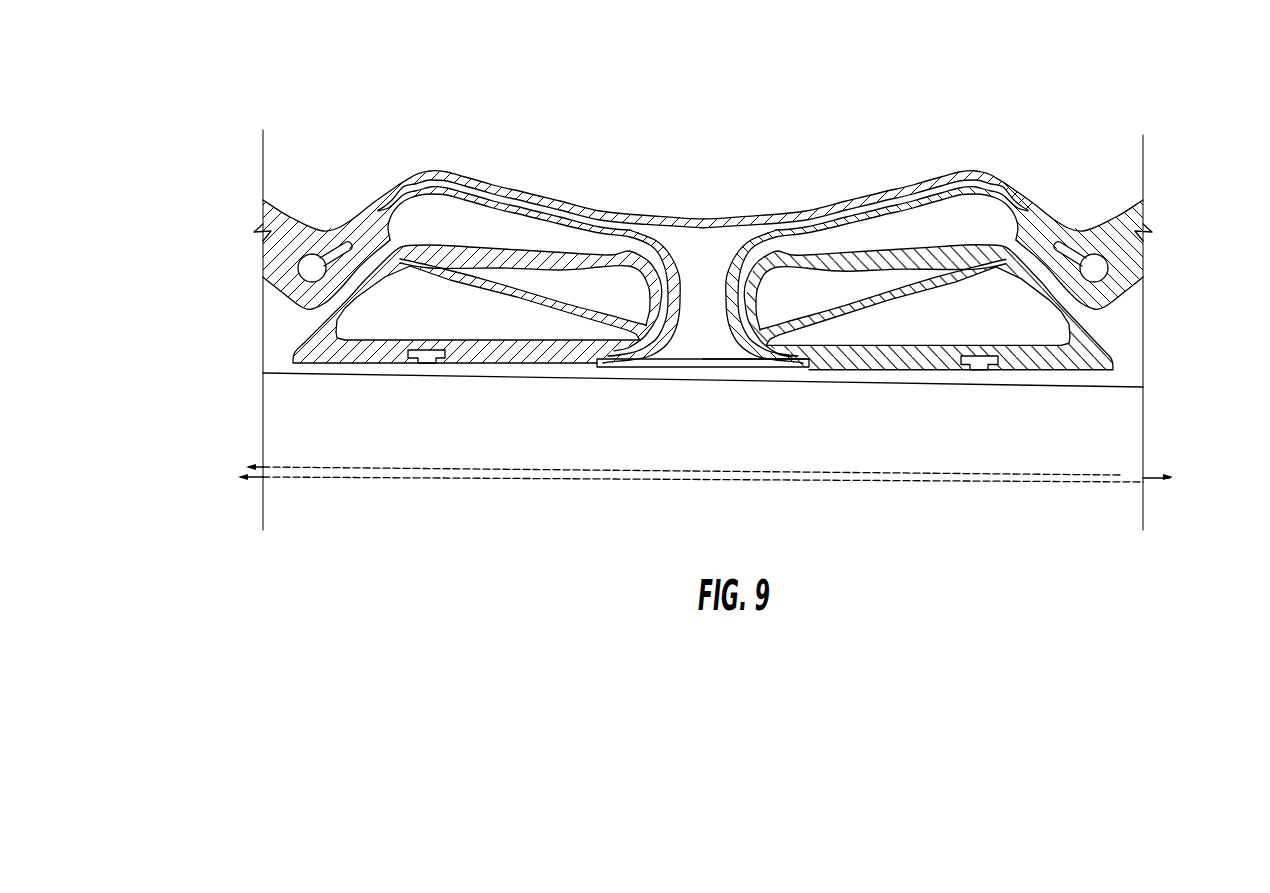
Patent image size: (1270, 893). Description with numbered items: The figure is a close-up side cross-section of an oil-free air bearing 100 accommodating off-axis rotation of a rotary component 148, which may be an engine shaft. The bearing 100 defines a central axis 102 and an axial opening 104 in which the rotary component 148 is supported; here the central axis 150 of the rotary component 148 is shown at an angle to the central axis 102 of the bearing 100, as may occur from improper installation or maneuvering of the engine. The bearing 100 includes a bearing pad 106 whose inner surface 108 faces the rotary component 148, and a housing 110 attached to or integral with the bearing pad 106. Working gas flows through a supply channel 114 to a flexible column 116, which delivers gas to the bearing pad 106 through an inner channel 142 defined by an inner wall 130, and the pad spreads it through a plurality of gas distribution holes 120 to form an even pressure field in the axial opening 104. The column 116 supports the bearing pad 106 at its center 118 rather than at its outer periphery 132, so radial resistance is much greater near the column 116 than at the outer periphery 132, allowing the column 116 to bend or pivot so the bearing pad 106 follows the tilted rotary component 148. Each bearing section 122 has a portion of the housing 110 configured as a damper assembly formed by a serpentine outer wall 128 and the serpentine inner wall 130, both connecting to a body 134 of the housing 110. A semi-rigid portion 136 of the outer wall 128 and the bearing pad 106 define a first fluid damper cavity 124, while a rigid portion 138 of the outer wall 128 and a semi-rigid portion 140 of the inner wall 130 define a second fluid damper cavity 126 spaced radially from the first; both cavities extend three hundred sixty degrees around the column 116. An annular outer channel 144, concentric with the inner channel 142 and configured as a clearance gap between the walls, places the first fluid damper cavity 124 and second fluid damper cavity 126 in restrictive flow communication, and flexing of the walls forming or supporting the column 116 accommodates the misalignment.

The bearing 100 is at (1045, 60).
The central axis 102 is at (1120, 477).
The axial opening 104 is at (290, 431).
The bearing pad 106 is at (510, 363).
The inner surface 108 is at (1066, 380).
The housing 110 is at (712, 115).
The supply channel 114 is at (547, 212).
The column 116 is at (763, 293).
The center 118 is at (682, 387).
The gas distribution holes 120 is at (623, 377).
The bearing section 122 is at (1045, 153).
The first fluid damper cavity 124 is at (438, 328).
The second fluid damper cavity 126 is at (438, 238).
The outer wall 128 is at (639, 295).
The inner wall 130 is at (774, 268).
The outer periphery 132 is at (290, 365).
The body 134 is at (283, 213).
The semi-rigid portion 136 is at (466, 328).
The rigid portion 138 is at (508, 217).
The semi-rigid portion 140 is at (456, 194).
The inner channel 142 is at (702, 283).
The outer channel 144 is at (673, 283).
The rotary component 148 is at (984, 458).
The central axis 150 is at (1140, 481).